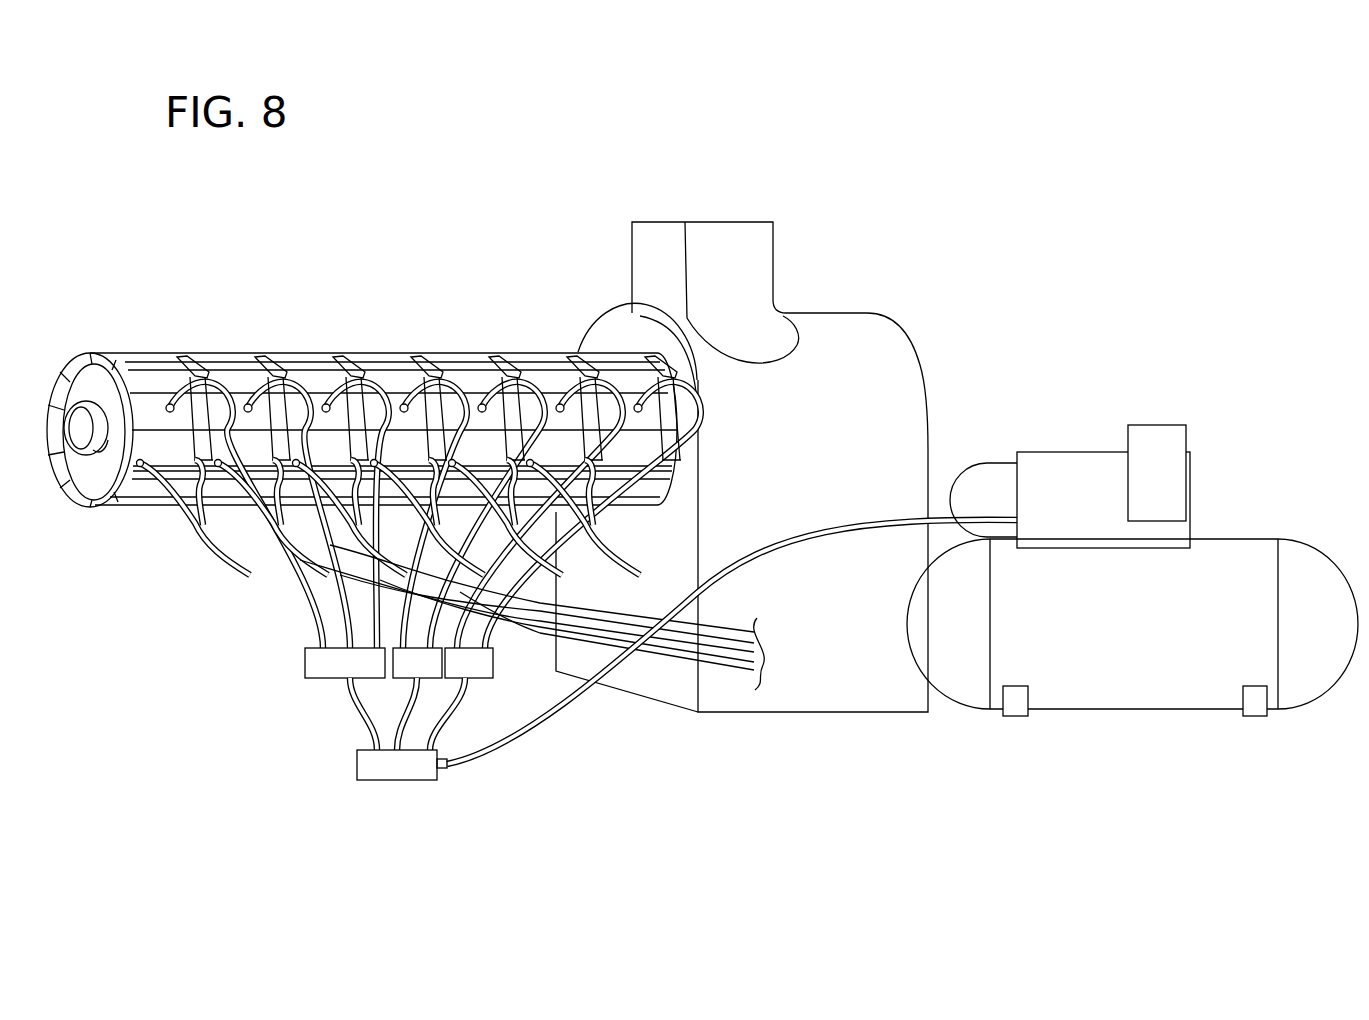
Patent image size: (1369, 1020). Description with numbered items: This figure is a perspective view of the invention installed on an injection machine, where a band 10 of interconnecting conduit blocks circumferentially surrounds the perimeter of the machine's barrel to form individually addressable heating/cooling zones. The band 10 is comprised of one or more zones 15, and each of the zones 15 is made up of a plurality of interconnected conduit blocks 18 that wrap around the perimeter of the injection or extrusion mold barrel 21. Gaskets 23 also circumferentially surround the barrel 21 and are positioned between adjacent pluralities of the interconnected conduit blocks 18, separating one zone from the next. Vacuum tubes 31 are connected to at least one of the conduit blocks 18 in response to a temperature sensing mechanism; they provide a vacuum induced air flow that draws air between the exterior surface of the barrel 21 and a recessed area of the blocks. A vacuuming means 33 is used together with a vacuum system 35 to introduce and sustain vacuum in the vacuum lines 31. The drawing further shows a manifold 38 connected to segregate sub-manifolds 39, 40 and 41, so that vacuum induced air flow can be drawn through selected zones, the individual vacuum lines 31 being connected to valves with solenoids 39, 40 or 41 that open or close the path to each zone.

The band 10 is at (354, 327).
The zones 15 is at (155, 351).
The interconnected conduit blocks 18 is at (147, 402).
The injection or extrusion mold barrel 21 is at (103, 451).
The gaskets 23 is at (212, 355).
The vacuum tubes 31 is at (330, 545).
The vacuuming means 33 is at (1062, 475).
The vacuum system 35 is at (1230, 550).
The manifold 38 is at (358, 755).
The sub-manifold with solenoid valve 39 is at (305, 665).
The sub-manifold with solenoid valve 40 is at (403, 673).
The sub-manifold with solenoid valve 41 is at (487, 662).